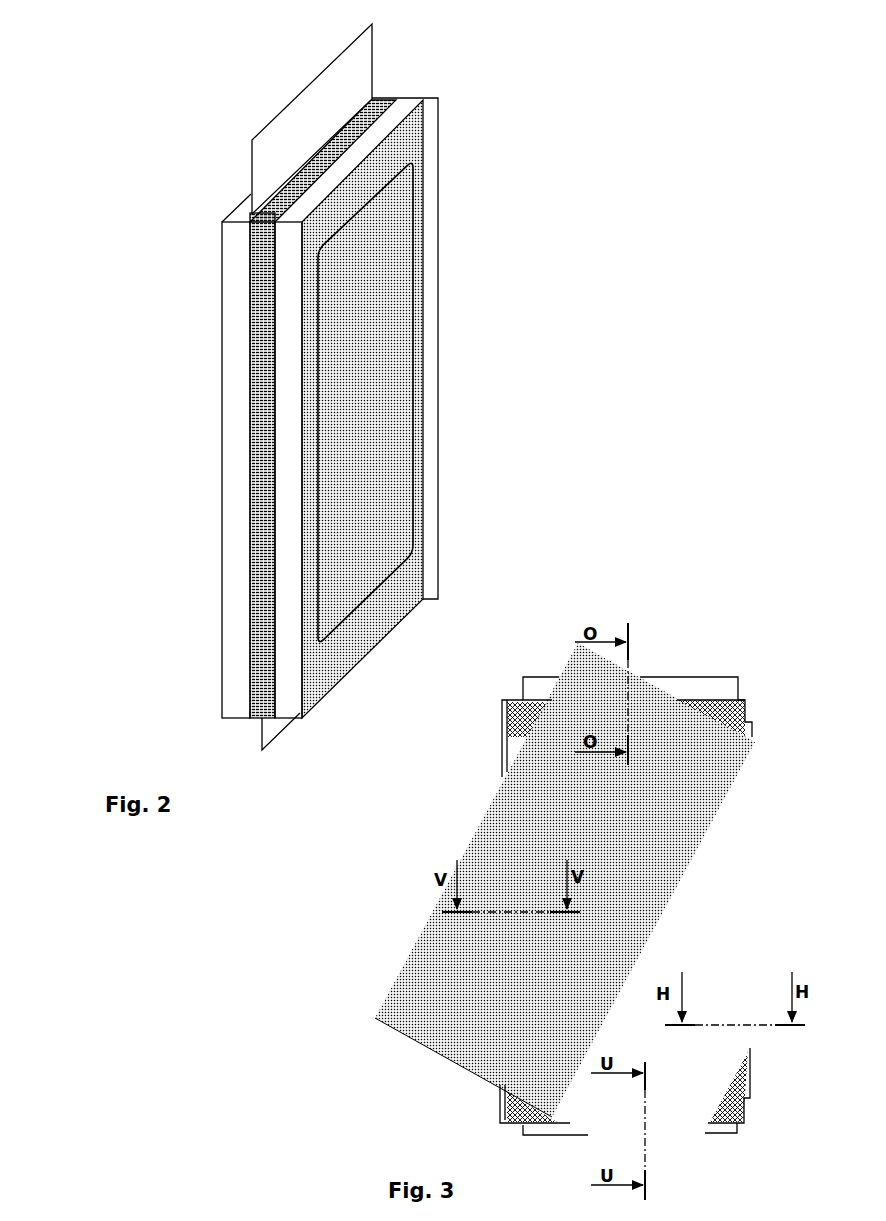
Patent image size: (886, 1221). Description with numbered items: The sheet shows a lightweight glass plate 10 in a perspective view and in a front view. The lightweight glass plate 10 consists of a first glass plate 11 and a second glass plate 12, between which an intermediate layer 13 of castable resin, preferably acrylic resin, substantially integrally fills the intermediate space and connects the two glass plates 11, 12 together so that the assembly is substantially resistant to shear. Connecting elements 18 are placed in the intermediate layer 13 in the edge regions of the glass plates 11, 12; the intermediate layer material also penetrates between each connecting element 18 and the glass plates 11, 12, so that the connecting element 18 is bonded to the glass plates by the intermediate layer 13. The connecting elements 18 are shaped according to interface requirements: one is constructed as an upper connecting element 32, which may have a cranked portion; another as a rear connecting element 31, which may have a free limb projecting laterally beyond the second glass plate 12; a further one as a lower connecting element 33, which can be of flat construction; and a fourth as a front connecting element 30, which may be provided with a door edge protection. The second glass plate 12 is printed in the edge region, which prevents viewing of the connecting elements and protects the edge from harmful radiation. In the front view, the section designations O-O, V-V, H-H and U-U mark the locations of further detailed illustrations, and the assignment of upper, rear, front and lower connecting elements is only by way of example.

In FIG. 2, the lightweight glass plate 10 is at (203, 175).
In FIG. 3, the lightweight glass plate 10 is at (562, 805).
In FIG. 2, the first glass plate 11 is at (235, 300).
In FIG. 2, the second glass plate 12 is at (290, 508).
In FIG. 2, the intermediate layer 13 is at (260, 395).
In FIG. 2, the connecting element 18 is at (337, 385).
In FIG. 3, the connecting element 18 is at (587, 851).
In FIG. 3, the front connecting element 30 is at (500, 1033).
In FIG. 2, the rear connecting element 31 is at (430, 313).
In FIG. 3, the rear connecting element 31 is at (748, 782).
In FIG. 2, the upper connecting element 32 is at (335, 102).
In FIG. 3, the upper connecting element 32 is at (653, 682).
In FIG. 2, the lower connecting element 33 is at (268, 728).
In FIG. 3, the lower connecting element 33 is at (542, 1130).